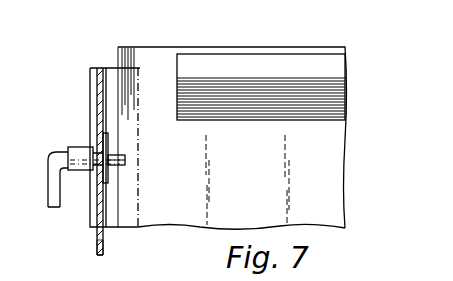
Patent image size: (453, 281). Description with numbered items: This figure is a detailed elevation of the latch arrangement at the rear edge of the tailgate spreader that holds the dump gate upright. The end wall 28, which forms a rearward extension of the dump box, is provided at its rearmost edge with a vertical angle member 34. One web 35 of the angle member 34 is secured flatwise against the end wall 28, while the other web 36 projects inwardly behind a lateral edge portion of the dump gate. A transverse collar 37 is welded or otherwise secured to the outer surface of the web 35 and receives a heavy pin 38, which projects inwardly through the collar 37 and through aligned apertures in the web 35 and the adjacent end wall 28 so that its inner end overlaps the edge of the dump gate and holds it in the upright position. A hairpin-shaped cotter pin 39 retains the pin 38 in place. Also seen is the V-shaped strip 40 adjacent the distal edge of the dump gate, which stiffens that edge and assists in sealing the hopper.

The end wall 28 is at (97, 249).
The vertical angle member 34 is at (93, 68).
The web 35 is at (90, 103).
The web 36 is at (108, 77).
The transverse collar 37 is at (83, 147).
The heavy pin 38 is at (117, 157).
The hairpin-shaped cotter pin 39 is at (113, 175).
The V-shaped strip 40 is at (177, 68).